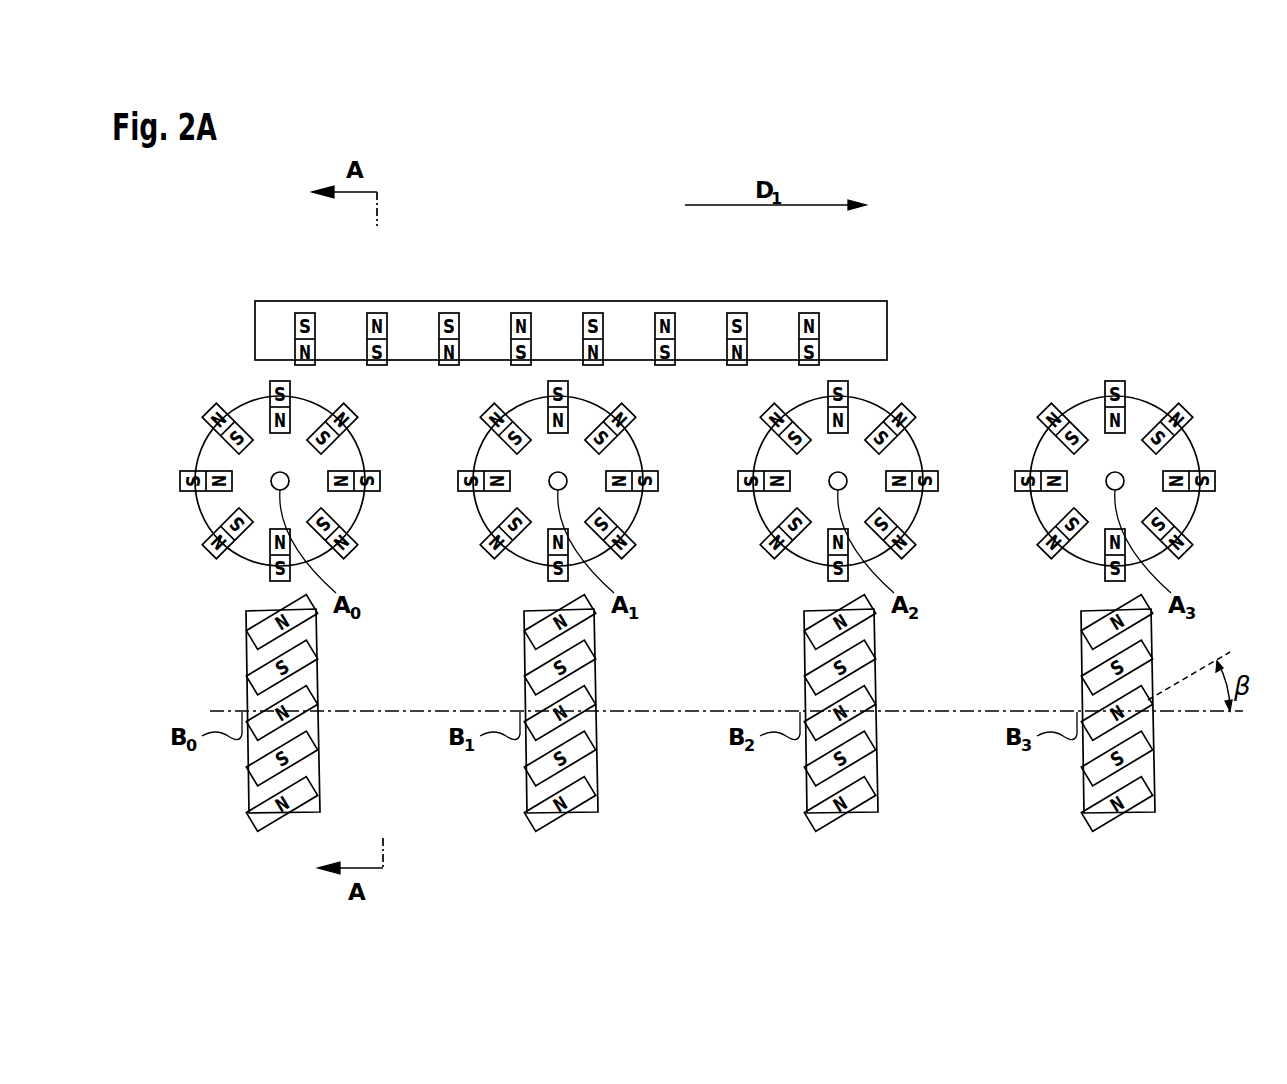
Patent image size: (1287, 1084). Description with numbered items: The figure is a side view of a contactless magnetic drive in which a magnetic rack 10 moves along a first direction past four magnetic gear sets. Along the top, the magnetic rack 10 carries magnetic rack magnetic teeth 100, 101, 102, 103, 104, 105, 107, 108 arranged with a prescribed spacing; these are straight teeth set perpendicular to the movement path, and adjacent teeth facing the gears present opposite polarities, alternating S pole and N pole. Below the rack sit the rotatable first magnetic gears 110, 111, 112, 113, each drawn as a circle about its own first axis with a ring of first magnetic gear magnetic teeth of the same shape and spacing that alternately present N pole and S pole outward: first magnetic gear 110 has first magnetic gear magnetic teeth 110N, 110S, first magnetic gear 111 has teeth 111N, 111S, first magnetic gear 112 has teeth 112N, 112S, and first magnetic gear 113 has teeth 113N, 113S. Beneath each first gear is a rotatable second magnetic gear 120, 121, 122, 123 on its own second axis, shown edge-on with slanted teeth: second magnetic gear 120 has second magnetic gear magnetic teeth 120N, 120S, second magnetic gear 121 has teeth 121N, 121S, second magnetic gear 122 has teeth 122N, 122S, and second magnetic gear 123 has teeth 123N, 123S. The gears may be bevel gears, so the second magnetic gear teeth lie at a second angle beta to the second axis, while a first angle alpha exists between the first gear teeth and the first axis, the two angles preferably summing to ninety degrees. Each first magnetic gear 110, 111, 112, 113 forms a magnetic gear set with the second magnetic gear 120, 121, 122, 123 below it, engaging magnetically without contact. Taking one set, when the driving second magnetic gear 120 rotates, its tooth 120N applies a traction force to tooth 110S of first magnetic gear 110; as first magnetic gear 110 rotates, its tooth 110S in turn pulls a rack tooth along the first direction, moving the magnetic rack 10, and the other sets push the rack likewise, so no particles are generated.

The magnetic rack 10 is at (868, 328).
The magnetic rack magnetic tooth 100 is at (305, 313).
The magnetic rack magnetic tooth 101 is at (377, 313).
The magnetic rack magnetic tooth 102 is at (449, 313).
The magnetic rack magnetic tooth 103 is at (521, 313).
The magnetic rack magnetic tooth 104 is at (593, 313).
The magnetic rack magnetic tooth 105 is at (665, 313).
The magnetic rack magnetic tooth 107 is at (737, 313).
The magnetic rack magnetic tooth 108 is at (809, 313).
The first magnetic gear 110 is at (206, 453).
The first magnetic gear magnetic tooth 110N is at (214, 412).
The first magnetic gear magnetic tooth 110S is at (188, 492).
The first magnetic gear 111 is at (484, 453).
The first magnetic gear magnetic tooth 111N is at (492, 412).
The first magnetic gear magnetic tooth 111S is at (466, 492).
The first magnetic gear 112 is at (764, 453).
The first magnetic gear magnetic tooth 112N is at (772, 412).
The first magnetic gear magnetic tooth 112S is at (746, 492).
The first magnetic gear 113 is at (1041, 453).
The first magnetic gear magnetic tooth 113N is at (1049, 412).
The first magnetic gear magnetic tooth 113S is at (1023, 492).
The second magnetic gear 120 is at (250, 658).
The second magnetic gear magnetic tooth 120S is at (258, 771).
The second magnetic gear magnetic tooth 120N is at (260, 822).
The second magnetic gear 121 is at (528, 658).
The second magnetic gear magnetic tooth 121S is at (536, 771).
The second magnetic gear magnetic tooth 121N is at (538, 822).
The second magnetic gear 122 is at (808, 658).
The second magnetic gear magnetic tooth 122S is at (816, 771).
The second magnetic gear magnetic tooth 122N is at (818, 822).
The second magnetic gear 123 is at (1085, 658).
The second magnetic gear magnetic tooth 123S is at (1093, 771).
The second magnetic gear magnetic tooth 123N is at (1095, 822).